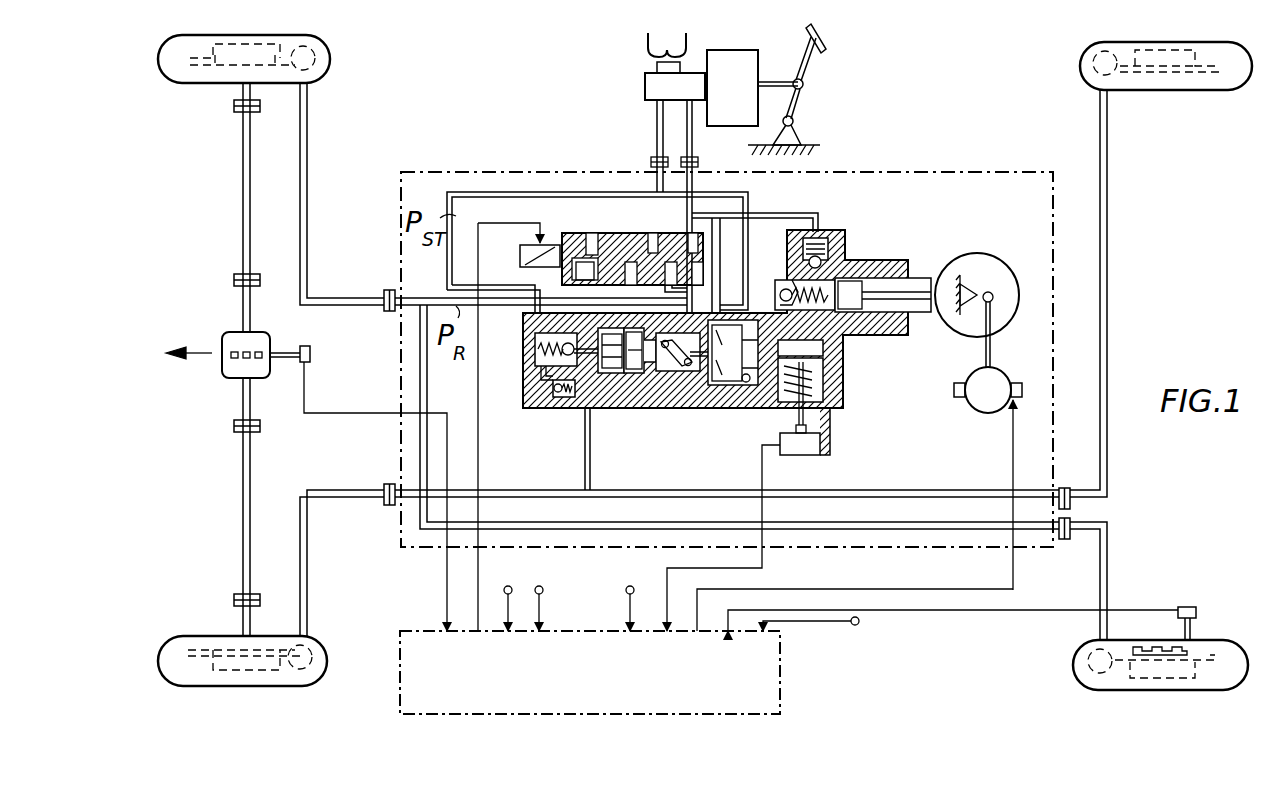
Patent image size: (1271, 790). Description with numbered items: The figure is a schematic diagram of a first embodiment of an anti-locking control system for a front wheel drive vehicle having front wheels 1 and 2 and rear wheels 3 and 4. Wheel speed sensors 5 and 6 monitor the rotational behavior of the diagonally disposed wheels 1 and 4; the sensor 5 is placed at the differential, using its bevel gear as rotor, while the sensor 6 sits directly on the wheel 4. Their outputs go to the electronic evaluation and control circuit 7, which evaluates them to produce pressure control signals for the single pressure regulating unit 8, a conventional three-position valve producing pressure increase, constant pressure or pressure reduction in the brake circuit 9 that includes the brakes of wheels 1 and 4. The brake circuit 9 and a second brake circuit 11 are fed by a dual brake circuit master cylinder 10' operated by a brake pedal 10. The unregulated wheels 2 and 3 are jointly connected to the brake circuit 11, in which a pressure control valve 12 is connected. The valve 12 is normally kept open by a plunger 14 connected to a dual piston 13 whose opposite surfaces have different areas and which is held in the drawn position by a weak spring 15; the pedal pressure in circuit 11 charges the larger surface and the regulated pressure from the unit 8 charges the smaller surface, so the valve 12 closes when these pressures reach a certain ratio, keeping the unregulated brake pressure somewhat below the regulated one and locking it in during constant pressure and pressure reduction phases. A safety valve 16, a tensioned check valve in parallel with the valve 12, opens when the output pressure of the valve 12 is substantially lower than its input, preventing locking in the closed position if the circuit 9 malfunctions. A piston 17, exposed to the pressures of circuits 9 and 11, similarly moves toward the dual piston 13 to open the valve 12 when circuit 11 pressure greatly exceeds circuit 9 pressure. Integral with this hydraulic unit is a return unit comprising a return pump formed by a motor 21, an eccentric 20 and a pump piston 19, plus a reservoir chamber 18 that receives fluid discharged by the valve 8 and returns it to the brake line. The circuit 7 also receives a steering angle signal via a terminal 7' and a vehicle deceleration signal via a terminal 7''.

The front wheel 1 is at (208, 80).
The front wheel 2 is at (192, 642).
The rear wheel 3 is at (1206, 85).
The rear wheel 4 is at (1230, 656).
The wheel speed sensor 5 is at (311, 355).
The wheel speed sensor 6 is at (1186, 607).
The electronic evaluation and control circuit 7 is at (706, 471).
The terminal 7' is at (637, 593).
The terminal 7'' is at (829, 641).
The pressure regulating unit 8 is at (584, 236).
The brake circuit 9 is at (695, 151).
The brake pedal 10 is at (796, 89).
The dual brake circuit master cylinder 10' is at (644, 68).
The brake circuit 11 is at (655, 151).
The pressure control valve 12 is at (533, 363).
The dual piston 13 is at (630, 378).
The plunger 14 is at (599, 380).
The weak spring 15 is at (681, 376).
The safety valve 16 is at (561, 408).
The piston 17 is at (737, 388).
The reservoir chamber 18 is at (845, 392).
The pump piston 19 is at (888, 292).
The eccentric 20 is at (993, 275).
The motor 21 is at (983, 406).